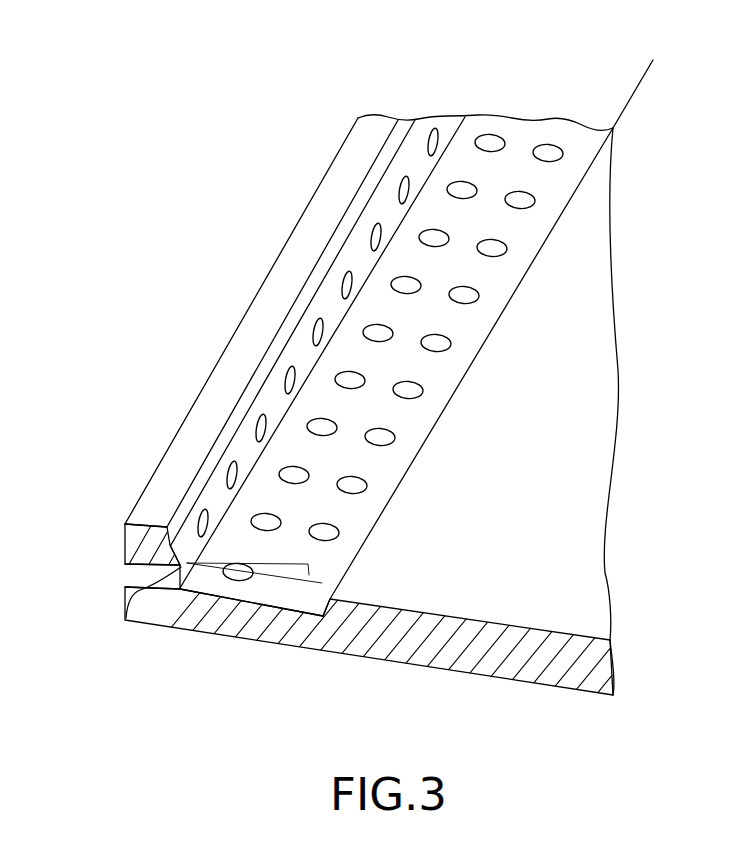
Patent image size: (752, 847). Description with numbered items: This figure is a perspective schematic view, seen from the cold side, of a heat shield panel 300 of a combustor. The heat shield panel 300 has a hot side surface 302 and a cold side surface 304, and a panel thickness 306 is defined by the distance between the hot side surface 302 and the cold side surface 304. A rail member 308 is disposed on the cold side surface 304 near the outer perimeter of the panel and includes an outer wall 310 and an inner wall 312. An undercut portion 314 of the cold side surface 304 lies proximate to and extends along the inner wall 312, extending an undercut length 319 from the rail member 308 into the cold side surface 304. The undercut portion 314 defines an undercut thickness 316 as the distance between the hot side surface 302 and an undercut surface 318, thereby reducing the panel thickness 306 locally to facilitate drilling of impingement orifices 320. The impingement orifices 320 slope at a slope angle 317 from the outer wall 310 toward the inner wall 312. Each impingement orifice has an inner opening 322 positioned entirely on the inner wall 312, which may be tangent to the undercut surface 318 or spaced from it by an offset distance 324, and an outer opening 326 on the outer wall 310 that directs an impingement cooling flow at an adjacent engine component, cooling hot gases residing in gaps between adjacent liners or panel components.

The heat shield panel 300 is at (210, 152).
The hot side surface 302 is at (545, 686).
The cold side surface 304 is at (578, 600).
The panel thickness 306 is at (460, 727).
The rail member 308 is at (183, 452).
The outer wall 310 is at (125, 535).
The inner wall 312 is at (412, 169).
The undercut portion 314 is at (212, 597).
The undercut thickness 316 is at (285, 583).
The slope angle 317 is at (308, 577).
The undercut surface 318 is at (508, 170).
The undercut length 319 is at (465, 117).
The impingement orifices 320 is at (321, 330).
The inner opening 322 is at (125, 615).
The offset distance 324 is at (462, 190).
The outer opening 326 is at (125, 578).